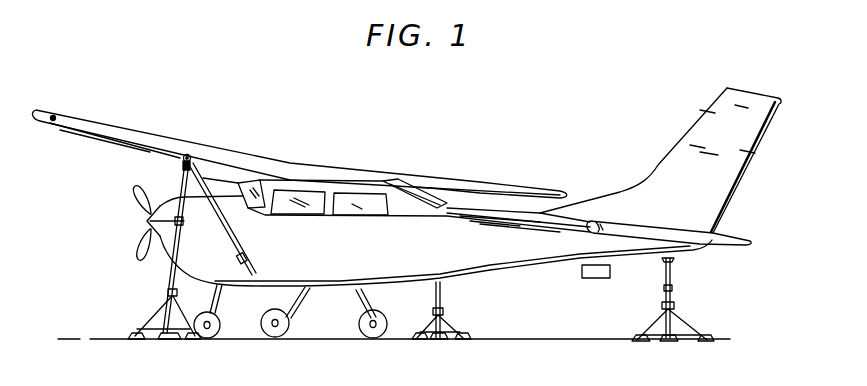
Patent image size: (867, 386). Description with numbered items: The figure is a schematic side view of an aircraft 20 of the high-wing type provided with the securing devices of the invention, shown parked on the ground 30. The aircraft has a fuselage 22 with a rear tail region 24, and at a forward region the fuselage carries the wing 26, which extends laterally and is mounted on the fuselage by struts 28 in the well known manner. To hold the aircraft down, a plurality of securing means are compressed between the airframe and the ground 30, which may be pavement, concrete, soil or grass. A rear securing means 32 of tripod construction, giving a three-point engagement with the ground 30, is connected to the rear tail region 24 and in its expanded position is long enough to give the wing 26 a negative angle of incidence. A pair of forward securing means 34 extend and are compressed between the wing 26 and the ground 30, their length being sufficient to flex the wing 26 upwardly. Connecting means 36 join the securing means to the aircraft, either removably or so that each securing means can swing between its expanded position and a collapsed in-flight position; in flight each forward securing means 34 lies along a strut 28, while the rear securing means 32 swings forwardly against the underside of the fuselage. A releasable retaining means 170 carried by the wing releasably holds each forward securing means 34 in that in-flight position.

The aircraft 20 is at (407, 213).
The fuselage 22 is at (543, 270).
The rear tail region 24 is at (690, 248).
The wing 26 is at (488, 158).
The struts 28 is at (204, 177).
The ground 30 is at (528, 341).
The rear securing means 32 is at (681, 293).
The forward securing means 34 is at (153, 273).
The connecting means 36 is at (180, 161).
The releasable retaining means 170 is at (600, 279).